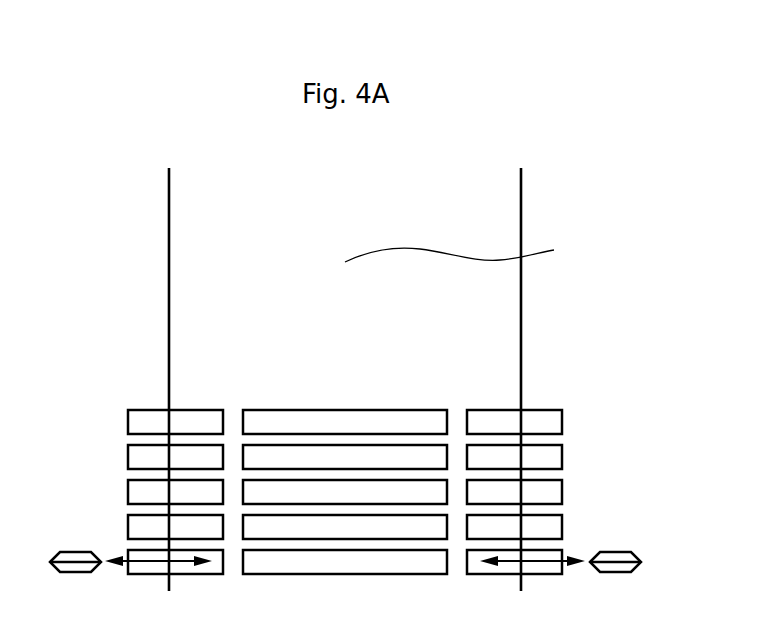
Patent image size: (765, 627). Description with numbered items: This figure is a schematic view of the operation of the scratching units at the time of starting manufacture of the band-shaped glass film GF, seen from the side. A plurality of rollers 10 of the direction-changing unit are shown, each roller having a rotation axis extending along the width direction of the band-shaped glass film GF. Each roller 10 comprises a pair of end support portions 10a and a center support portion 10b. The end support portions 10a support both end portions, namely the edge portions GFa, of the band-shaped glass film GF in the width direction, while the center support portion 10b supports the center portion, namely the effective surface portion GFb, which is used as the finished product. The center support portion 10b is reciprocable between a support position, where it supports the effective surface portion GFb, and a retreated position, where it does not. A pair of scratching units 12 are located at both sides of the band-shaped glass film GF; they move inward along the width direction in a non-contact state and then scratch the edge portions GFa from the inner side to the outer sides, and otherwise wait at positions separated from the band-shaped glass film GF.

The roller 10 is at (287, 493).
The end support portion 10a is at (138, 422).
The center support portion 10b is at (398, 493).
The scratching unit 12 is at (72, 551).
The band-shaped glass film GF is at (524, 201).
The edge portion GFa is at (192, 339).
The effective surface portion GFb is at (473, 249).